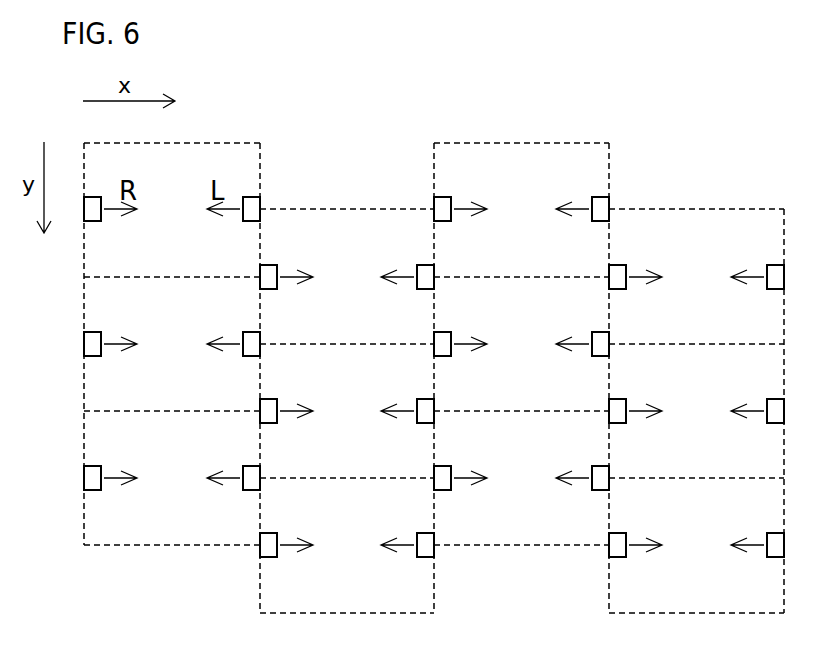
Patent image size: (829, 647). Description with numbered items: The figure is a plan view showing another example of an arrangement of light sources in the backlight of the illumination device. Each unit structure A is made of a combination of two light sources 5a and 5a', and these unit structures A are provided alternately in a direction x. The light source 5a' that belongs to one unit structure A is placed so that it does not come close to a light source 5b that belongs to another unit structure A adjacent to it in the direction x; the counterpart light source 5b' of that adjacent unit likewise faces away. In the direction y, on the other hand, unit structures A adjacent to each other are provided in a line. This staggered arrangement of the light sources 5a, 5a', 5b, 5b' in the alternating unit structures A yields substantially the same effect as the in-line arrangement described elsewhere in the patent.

The unit structure A is at (221, 128).
The light source 5a is at (92, 246).
The light source 5a' is at (233, 236).
The light source 5b is at (286, 256).
The light-emitting element (left-emitting, second column) 5b' is at (407, 300).